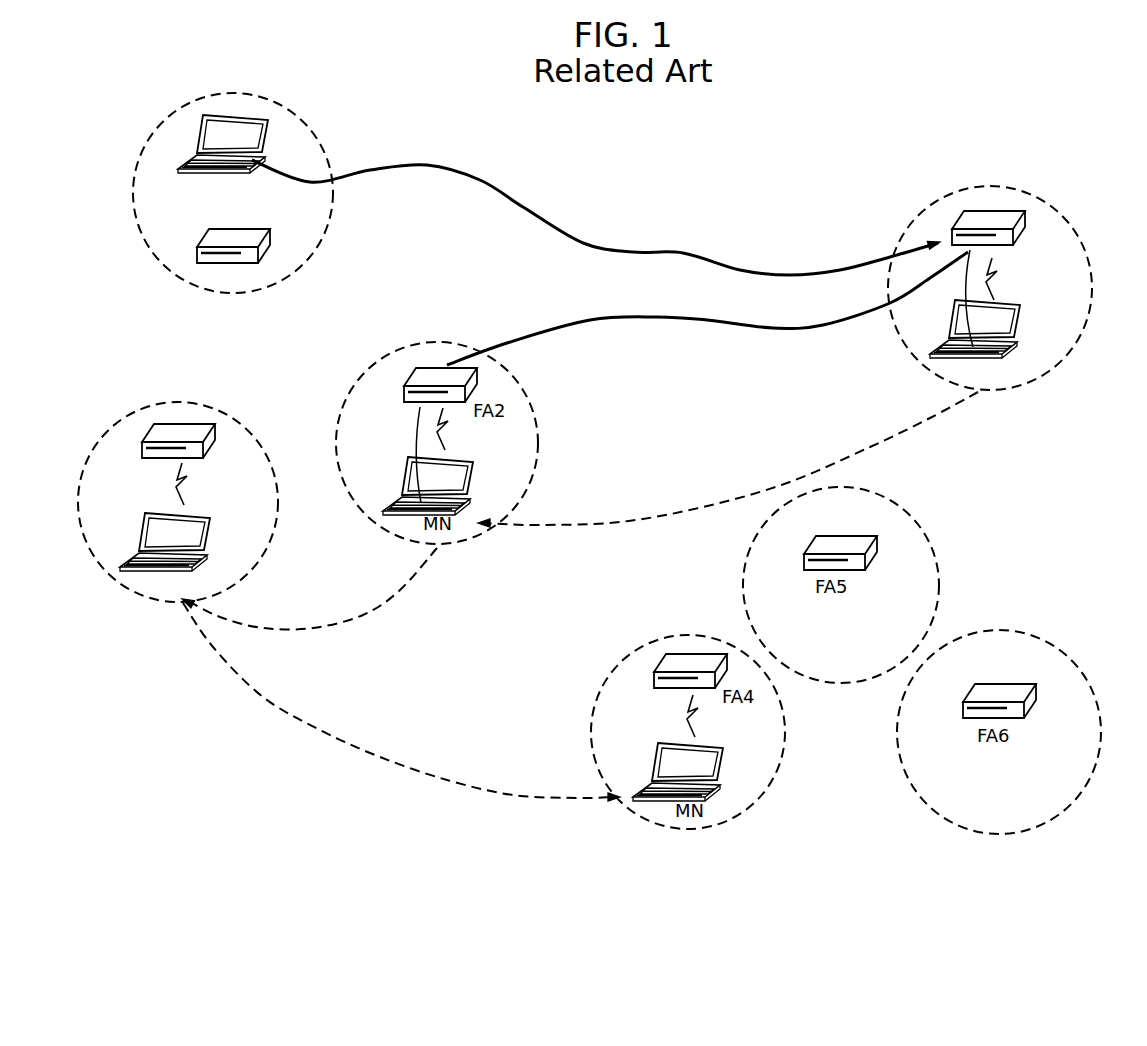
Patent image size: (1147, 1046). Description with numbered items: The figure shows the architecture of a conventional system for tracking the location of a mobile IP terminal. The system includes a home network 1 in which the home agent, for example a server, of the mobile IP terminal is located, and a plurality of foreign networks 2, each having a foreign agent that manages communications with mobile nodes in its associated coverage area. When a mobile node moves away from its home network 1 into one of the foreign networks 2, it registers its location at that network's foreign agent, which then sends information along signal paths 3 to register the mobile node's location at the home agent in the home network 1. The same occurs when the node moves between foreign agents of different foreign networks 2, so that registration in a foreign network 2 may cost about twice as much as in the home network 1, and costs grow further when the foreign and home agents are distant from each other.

The home network 1 is at (1093, 272).
The foreign networks 2 is at (332, 212).
The network connection between foreign agent FA1 network and home agent HA 3 is at (520, 206).